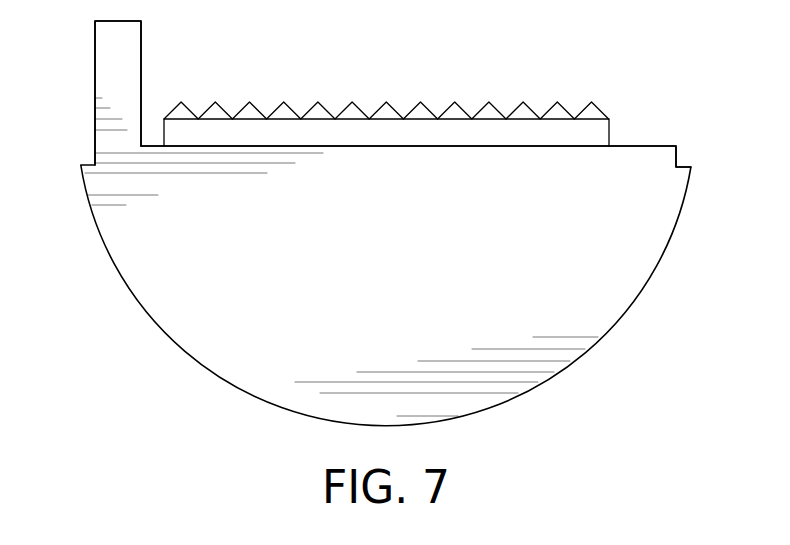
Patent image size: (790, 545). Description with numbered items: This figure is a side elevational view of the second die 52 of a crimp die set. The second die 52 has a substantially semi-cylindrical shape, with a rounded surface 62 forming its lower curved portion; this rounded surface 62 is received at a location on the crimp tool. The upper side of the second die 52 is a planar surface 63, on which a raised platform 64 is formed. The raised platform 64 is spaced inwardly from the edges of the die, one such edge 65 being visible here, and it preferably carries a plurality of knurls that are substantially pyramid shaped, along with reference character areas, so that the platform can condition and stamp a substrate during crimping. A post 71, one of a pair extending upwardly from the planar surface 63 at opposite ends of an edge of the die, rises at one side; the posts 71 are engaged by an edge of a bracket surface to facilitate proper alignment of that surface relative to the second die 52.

The second die 52 is at (163, 365).
The rounded surface 62 is at (552, 378).
The planar surface 63 is at (656, 146).
The raised platform 64 is at (610, 128).
The edge 65 is at (383, 146).
The post 71 is at (95, 50).